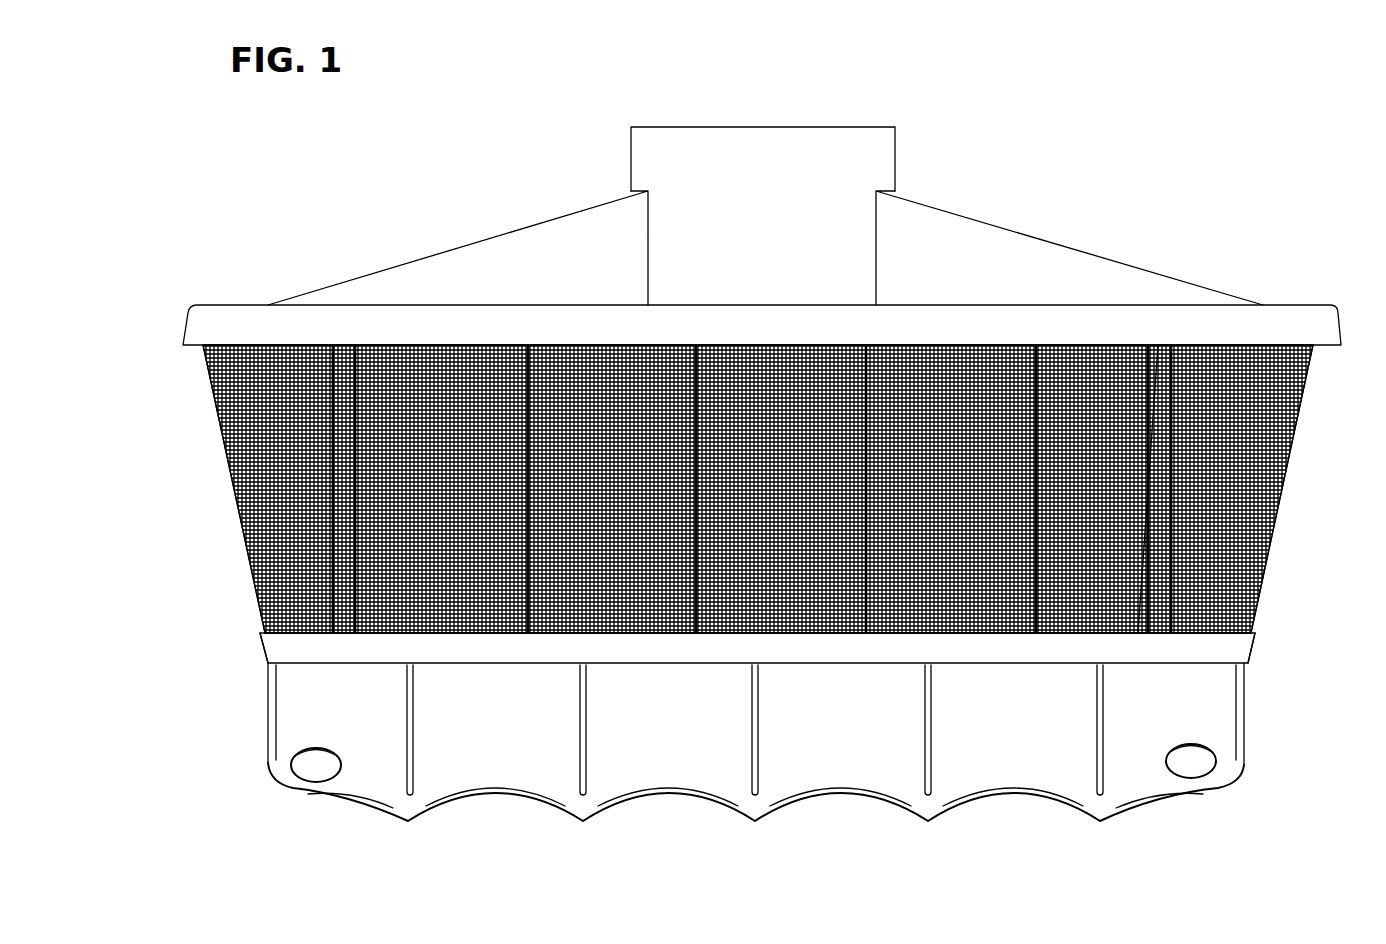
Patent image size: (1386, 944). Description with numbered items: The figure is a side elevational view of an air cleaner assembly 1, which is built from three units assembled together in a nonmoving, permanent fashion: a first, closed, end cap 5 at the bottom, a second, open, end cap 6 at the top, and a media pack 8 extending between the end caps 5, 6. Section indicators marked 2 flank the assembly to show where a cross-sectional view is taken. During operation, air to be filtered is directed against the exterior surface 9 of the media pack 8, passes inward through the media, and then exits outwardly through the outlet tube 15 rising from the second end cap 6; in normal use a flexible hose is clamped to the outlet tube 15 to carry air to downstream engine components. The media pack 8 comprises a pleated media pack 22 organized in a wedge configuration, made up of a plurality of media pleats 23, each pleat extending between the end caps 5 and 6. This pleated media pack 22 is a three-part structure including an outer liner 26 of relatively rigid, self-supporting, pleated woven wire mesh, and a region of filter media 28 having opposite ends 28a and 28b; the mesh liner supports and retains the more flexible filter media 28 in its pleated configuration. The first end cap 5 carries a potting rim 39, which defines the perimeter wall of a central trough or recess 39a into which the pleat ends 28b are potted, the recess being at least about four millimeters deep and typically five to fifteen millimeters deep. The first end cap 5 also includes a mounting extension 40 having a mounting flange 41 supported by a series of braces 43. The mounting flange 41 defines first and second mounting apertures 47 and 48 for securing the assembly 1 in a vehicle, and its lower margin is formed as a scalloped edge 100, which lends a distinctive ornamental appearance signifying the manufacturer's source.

The air cleaner assembly 1 is at (1261, 117).
The section line 2 is at (146, 469).
The first end cap 5 is at (779, 650).
The second end cap 6 is at (765, 248).
The media pack 8 is at (1235, 489).
The exterior surface 9 is at (1010, 489).
The outlet tube 15 is at (788, 159).
The pleated media pack 22 is at (846, 489).
The media pleats 23 is at (784, 448).
The outer liner 26 is at (762, 303).
The filter media 28 is at (779, 489).
The first end of filter media 28a is at (759, 369).
The second end of filter media 28b is at (759, 613).
The potting rim 39 is at (236, 649).
The recess 39a is at (1284, 664).
The mounting extension 40 is at (789, 714).
The mounting flange 41 is at (756, 811).
The braces 43 is at (782, 730).
The first mounting aperture 47 is at (325, 742).
The second mounting aperture 48 is at (1192, 741).
The scalloped edge 100 is at (755, 822).